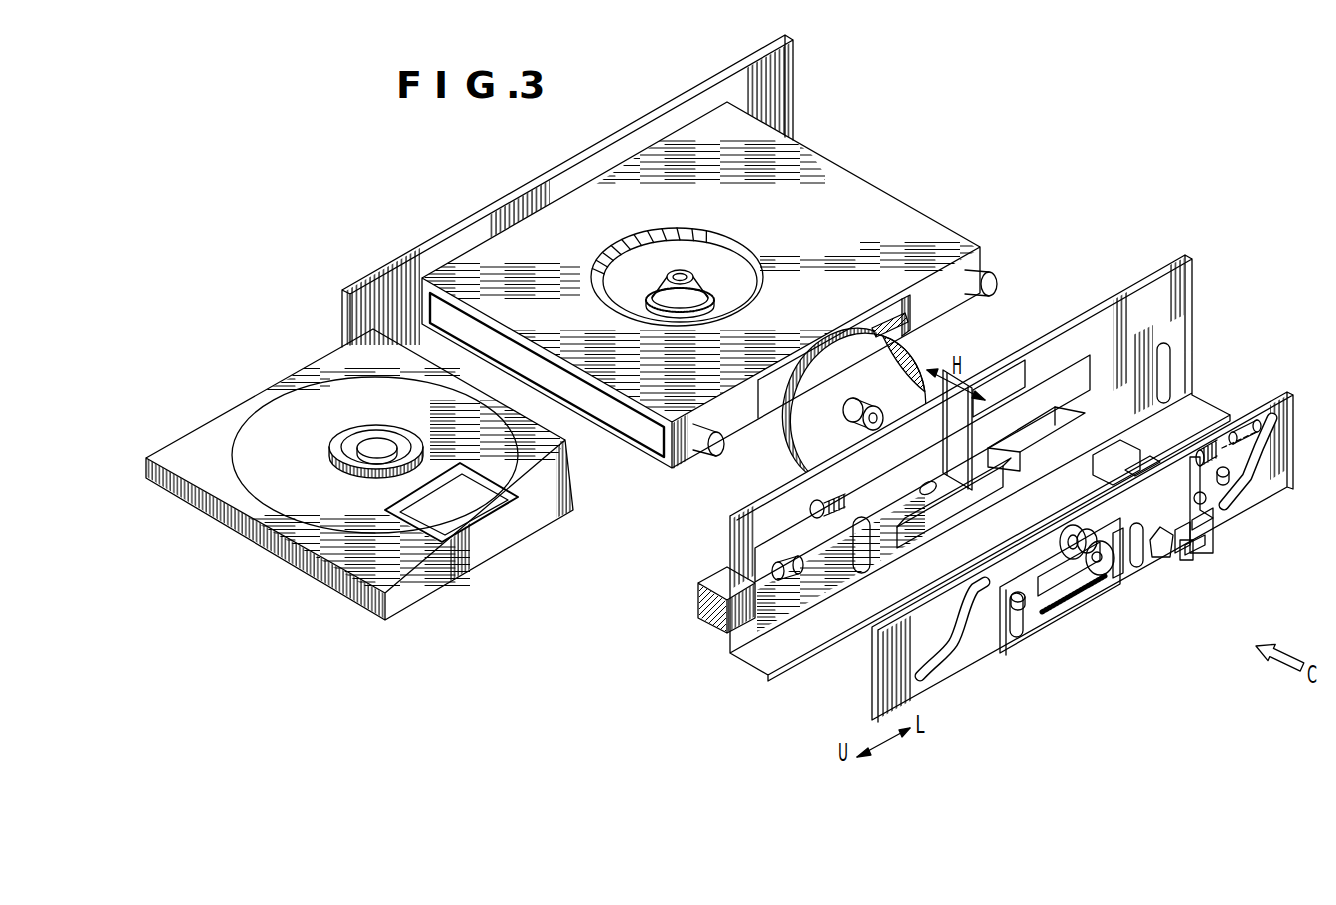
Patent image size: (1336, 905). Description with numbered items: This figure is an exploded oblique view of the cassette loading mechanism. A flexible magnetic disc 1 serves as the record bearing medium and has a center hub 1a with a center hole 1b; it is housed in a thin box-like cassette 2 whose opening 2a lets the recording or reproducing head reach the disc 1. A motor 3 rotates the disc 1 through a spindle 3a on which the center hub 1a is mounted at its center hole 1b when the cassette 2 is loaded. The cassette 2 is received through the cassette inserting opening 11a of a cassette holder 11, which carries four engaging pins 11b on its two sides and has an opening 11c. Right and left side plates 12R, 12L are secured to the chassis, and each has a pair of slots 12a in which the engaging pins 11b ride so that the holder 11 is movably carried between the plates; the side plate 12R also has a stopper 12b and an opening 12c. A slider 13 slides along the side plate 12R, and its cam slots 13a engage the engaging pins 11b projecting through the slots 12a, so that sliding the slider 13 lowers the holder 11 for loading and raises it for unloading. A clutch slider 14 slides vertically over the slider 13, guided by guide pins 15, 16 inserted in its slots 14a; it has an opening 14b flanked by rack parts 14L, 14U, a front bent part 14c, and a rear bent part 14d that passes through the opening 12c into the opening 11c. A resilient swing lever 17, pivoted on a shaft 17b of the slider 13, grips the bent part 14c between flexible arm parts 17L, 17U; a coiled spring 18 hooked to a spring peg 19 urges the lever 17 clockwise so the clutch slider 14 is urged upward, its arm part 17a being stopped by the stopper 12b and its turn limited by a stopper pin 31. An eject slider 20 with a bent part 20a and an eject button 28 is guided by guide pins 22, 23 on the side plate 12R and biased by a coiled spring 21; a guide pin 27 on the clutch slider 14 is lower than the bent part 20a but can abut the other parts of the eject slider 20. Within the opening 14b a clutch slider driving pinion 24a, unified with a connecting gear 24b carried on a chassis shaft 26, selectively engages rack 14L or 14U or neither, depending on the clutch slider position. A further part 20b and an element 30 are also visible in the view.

The flexible magnetic disc 1 is at (497, 470).
The center hub 1a is at (362, 438).
The center hole 1b is at (372, 455).
The cassette 2 is at (318, 572).
The opening 2a is at (455, 538).
The motor 3 is at (720, 290).
The spindle 3a is at (675, 276).
The cassette holder 11 is at (660, 462).
The cassette inserting opening 11a is at (638, 428).
The engaging pins 11b is at (708, 457).
The opening 11c is at (795, 370).
The left side plate 12L is at (785, 88).
The right side plate 12R is at (1175, 283).
The slots 12a is at (853, 580).
The stopper 12b is at (1097, 453).
The opening 12c is at (1002, 375).
The slider 13 is at (927, 687).
The cam slots 13a is at (953, 650).
The clutch slider 14 is at (1043, 630).
The slots 14a is at (1015, 637).
The opening 14b is at (1060, 592).
The front bent part 14c is at (1178, 560).
The rear bent part 14d is at (1137, 460).
The rack part 14L is at (1117, 576).
The rack part 14U is at (1098, 600).
The guide pin 15 is at (1025, 607).
The guide pin 16 is at (1158, 548).
The swing lever 17 is at (1207, 520).
The arm part 17a is at (1180, 545).
The shaft 17b is at (1210, 502).
The flexible arm part 17L is at (1205, 530).
The flexible arm part 17U is at (1192, 548).
The coiled spring 18 is at (1228, 440).
The spring peg 19 is at (1250, 415).
The eject slider 20 is at (757, 577).
The bent part 20a is at (976, 452).
The bracket of slider 20b is at (1063, 403).
The coiled spring 21 is at (843, 460).
The guide pin 22 is at (800, 563).
The guide pin 23 is at (935, 487).
The clutch slider driving pinion 24a is at (866, 398).
The connecting gear 24b is at (840, 335).
The shaft 26 is at (1057, 533).
The guide pin 27 is at (1090, 530).
The eject button 28 is at (698, 600).
The spring 30 is at (815, 508).
The stopper pin 31 is at (1232, 478).